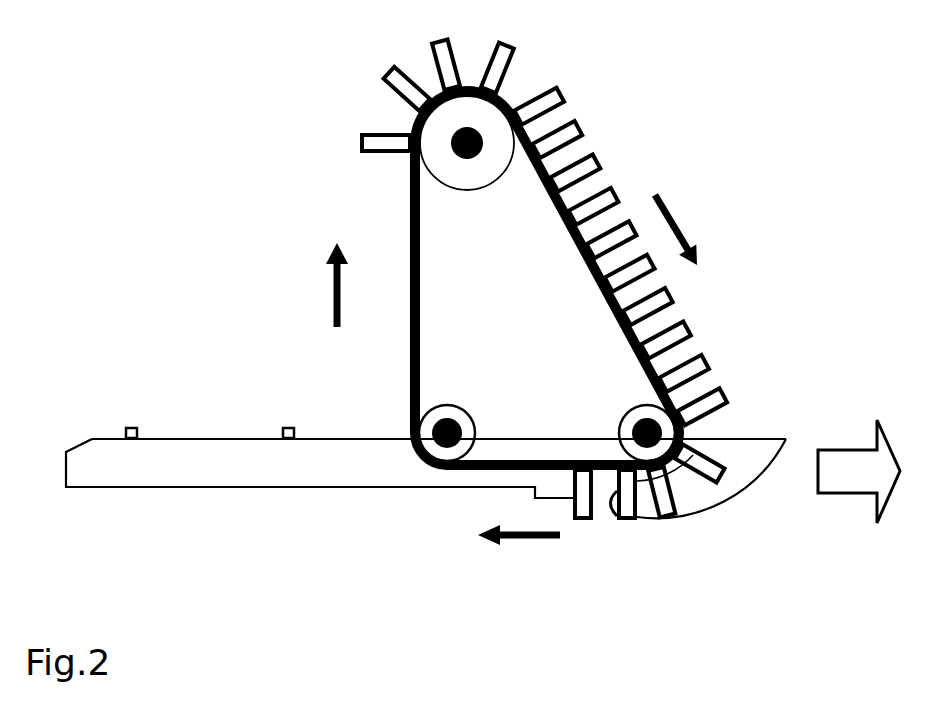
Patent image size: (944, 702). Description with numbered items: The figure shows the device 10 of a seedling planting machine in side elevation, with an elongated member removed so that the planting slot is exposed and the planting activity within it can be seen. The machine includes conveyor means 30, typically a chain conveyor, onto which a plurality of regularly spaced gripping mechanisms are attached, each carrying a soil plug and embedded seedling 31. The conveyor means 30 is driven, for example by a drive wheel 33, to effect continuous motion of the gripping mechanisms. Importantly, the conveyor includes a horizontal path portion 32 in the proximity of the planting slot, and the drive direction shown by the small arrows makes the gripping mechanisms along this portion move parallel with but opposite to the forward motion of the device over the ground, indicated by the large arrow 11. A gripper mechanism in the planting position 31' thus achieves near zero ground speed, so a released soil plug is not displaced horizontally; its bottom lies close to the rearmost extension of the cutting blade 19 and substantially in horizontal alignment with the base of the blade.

The device 10 is at (89, 390).
The direction of travel 11 is at (833, 486).
The cutting blade 19 is at (690, 485).
The conveyor means 30 is at (413, 197).
The soil plug and embedded seedling 31 is at (544, 260).
The gripper mechanism in planting position 31' is at (508, 538).
The horizontal path portion 32 is at (510, 592).
The drive wheel 33 is at (440, 136).